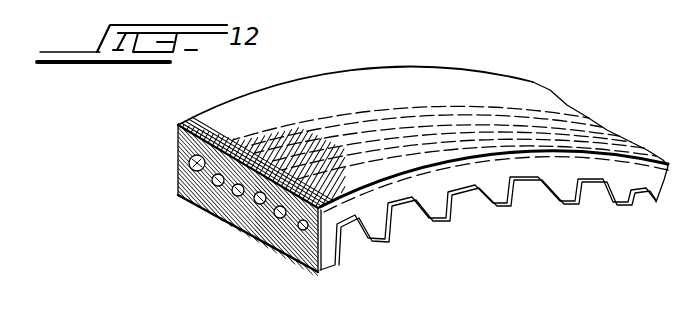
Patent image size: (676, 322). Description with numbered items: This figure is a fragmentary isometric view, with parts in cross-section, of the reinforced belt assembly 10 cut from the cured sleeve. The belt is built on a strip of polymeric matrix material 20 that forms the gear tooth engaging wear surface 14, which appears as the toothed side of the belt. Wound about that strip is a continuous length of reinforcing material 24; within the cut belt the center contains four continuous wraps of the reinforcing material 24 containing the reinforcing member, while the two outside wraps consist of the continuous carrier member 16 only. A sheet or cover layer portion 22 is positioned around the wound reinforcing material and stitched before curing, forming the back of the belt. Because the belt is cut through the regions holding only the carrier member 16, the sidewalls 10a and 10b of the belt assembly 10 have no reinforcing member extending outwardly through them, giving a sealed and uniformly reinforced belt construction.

The belt assembly 10 is at (366, 62).
The sidewall 10a is at (378, 221).
The sidewall 10b is at (177, 164).
The gear tooth engaging wear surface 14 is at (337, 249).
The carrier member 16 is at (175, 196).
The polymeric matrix material 20 is at (511, 183).
The cover layer portion 22 is at (177, 140).
The reinforcing material 24 is at (281, 273).